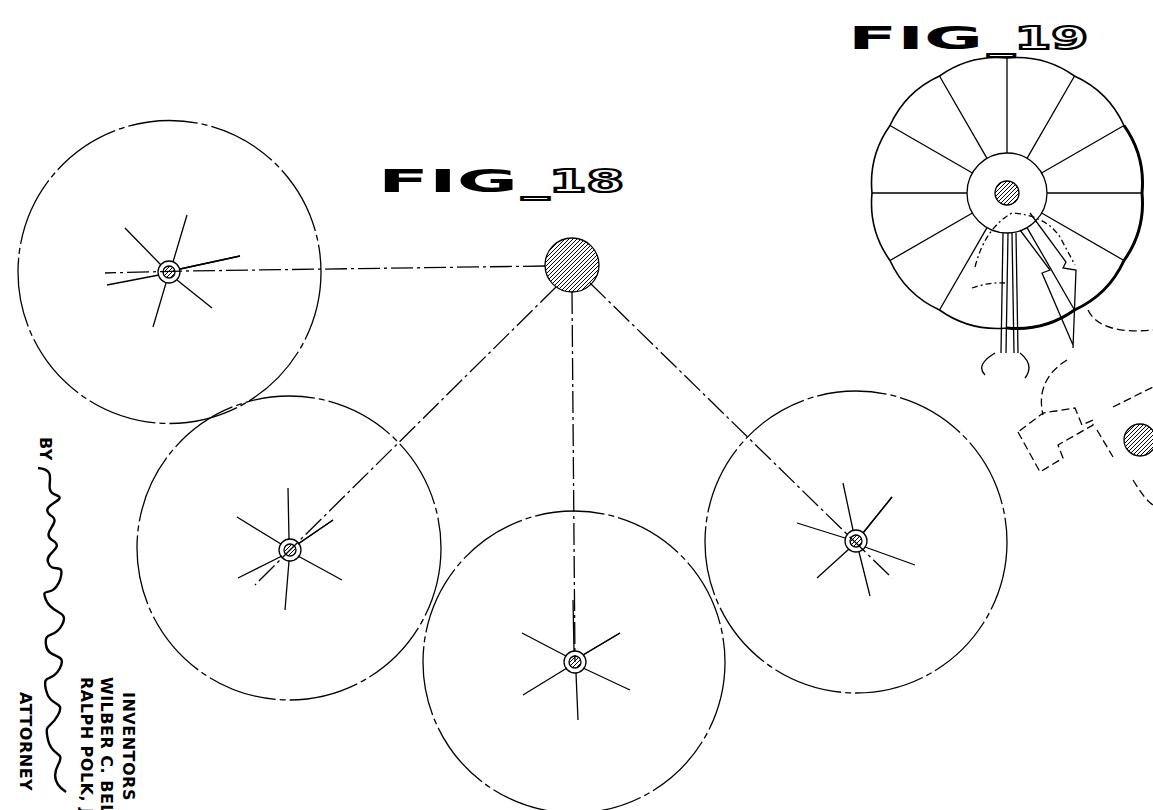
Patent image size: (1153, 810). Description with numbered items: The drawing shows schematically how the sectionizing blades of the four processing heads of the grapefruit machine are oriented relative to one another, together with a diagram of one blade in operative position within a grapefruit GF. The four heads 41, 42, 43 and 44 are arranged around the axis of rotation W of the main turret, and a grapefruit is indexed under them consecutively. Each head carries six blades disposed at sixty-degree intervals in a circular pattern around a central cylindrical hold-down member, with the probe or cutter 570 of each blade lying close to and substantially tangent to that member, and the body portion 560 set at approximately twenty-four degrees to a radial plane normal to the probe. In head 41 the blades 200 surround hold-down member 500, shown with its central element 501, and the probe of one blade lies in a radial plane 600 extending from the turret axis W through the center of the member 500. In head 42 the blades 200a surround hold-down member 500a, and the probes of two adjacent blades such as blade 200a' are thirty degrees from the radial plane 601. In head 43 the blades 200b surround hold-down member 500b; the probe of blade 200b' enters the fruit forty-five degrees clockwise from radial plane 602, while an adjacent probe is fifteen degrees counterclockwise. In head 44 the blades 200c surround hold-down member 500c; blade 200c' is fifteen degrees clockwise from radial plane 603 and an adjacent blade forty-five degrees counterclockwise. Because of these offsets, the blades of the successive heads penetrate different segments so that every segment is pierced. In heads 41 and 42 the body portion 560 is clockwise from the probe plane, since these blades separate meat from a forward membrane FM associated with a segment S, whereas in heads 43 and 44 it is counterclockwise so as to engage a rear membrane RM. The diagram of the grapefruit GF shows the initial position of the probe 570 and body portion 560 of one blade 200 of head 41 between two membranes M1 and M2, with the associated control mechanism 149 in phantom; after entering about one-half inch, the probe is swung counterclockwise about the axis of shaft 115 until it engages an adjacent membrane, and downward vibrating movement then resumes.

In FIG. 18, the fourth sectionizing head 44 is at (236, 134).
In FIG. 18, the third sectionizing head 43 is at (291, 698).
In FIG. 18, the second sectionizing head 42 is at (702, 738).
In FIG. 18, the first sectionizing head 41 is at (992, 586).
In FIG. 18, the axis of rotation of main turret W is at (598, 263).
In FIG. 18, the radial plane 600 is at (716, 402).
In FIG. 18, the radial plane 601 is at (576, 430).
In FIG. 18, the radial plane 602 is at (414, 441).
In FIG. 18, the radial plane 603 is at (330, 275).
In FIG. 18, the blade 200 is at (892, 497).
In FIG. 19, the blade 200 is at (1005, 370).
In FIG. 18, the blade 200a is at (560, 681).
In FIG. 18, the blade 200a' is at (526, 621).
In FIG. 18, the blade 200b is at (282, 560).
In FIG. 18, the blade 200b' is at (357, 535).
In FIG. 18, the blade 200c is at (159, 272).
In FIG. 18, the blade 200c' is at (224, 240).
In FIG. 18, the hold-down member 500 is at (866, 540).
In FIG. 19, the hold-down member 500 is at (990, 168).
In FIG. 18, the hold-down member 500a is at (588, 660).
In FIG. 18, the hold-down member 500b is at (279, 548).
In FIG. 18, the hold-down member 500c is at (158, 269).
In FIG. 18, the hub shaft 501 is at (847, 548).
In FIG. 19, the hub shaft 501 is at (1020, 189).
In FIG. 18, the body portion 560 is at (232, 258).
In FIG. 19, the body portion 560 is at (1003, 300).
In FIG. 18, the probe 570 is at (180, 277).
In FIG. 19, the probe 570 is at (1020, 249).
In FIG. 19, the grapefruit GF is at (1090, 103).
In FIG. 19, the forward membrane FM is at (892, 196).
In FIG. 19, the segment S is at (878, 213).
In FIG. 19, the rear membrane RM is at (902, 246).
In FIG. 19, the membrane M1 is at (1003, 320).
In FIG. 19, the membrane M2 is at (1080, 298).
In FIG. 19, the shaft 115 is at (1140, 456).
In FIG. 19, the control mechanism 149 is at (1057, 472).